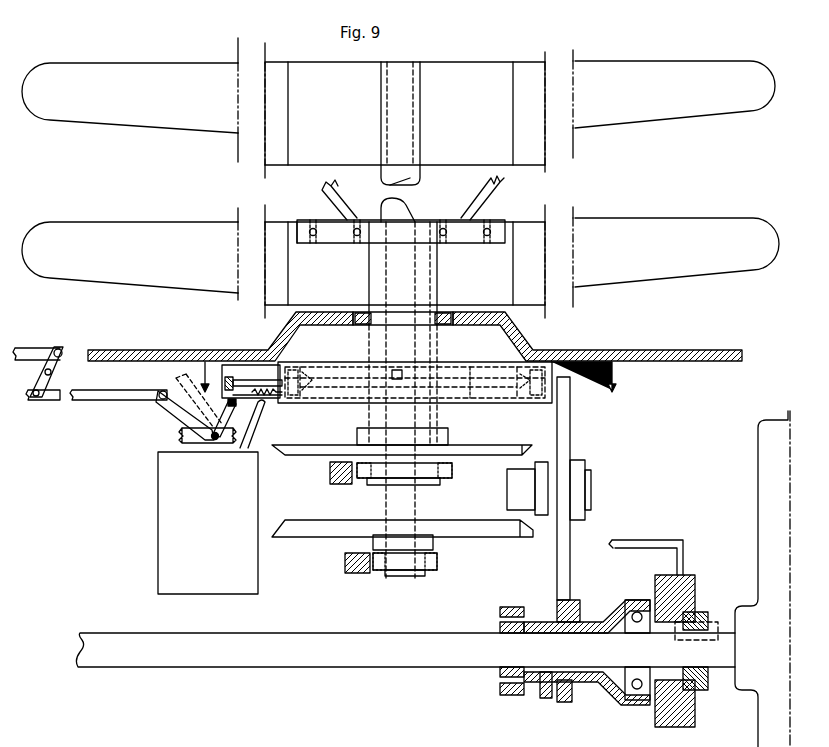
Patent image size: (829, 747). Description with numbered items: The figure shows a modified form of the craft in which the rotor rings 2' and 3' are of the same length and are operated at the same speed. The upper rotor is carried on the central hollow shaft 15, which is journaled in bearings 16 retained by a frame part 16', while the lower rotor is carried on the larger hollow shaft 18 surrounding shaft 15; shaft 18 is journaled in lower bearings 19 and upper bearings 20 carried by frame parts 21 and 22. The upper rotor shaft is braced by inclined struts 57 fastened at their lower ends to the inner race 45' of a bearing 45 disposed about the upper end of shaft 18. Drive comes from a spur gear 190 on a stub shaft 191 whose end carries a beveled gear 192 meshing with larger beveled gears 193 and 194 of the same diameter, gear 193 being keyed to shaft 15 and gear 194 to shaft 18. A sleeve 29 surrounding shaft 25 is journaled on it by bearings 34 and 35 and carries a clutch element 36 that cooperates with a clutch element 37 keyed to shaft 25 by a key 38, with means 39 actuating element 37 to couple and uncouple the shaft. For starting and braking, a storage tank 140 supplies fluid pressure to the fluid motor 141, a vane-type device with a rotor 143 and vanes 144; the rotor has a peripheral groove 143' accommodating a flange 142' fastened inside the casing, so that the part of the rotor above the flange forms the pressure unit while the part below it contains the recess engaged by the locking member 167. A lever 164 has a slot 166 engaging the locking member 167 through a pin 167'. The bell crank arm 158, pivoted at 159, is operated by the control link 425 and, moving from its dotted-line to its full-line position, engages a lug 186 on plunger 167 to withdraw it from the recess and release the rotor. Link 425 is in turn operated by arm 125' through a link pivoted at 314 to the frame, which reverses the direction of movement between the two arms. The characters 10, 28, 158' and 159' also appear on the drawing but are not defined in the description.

The rotor ring 2' is at (398, 108).
The rotor ring 3' is at (400, 258).
The direction arrow 10 is at (406, 388).
The central hollow shaft 15 is at (420, 500).
The bearings 16 is at (398, 569).
The frame part 16' is at (349, 578).
The hollow shaft 18 is at (437, 338).
The lower bearings 19 is at (361, 480).
The upper bearings 20 is at (365, 312).
The aircraft frame part 21 is at (329, 476).
The aircraft frame part 22 is at (530, 341).
The shaft 25 is at (416, 668).
The bearing 28 is at (570, 704).
The sleeve 29 is at (540, 700).
The bearing 34 is at (500, 689).
The bearing 35 is at (615, 700).
The clutch element 36 is at (655, 582).
The clutch element 37 is at (696, 590).
The key 38 is at (702, 626).
The actuating means 39 is at (640, 548).
The bearing 45 is at (401, 251).
The inner race 45' is at (309, 245).
The inclined struts 57 is at (498, 186).
The operating arm 125' is at (37, 345).
The storage tank 140 is at (258, 594).
The fluid motor 141 is at (494, 414).
The flange 142' is at (450, 361).
The rotor disc 143 is at (493, 360).
The groove 143' is at (417, 366).
The vanes 144 is at (402, 370).
The bell crank arm 158 is at (242, 424).
The link 158' is at (261, 422).
The pivot 159 is at (163, 423).
The link alternate position 159' is at (181, 397).
The lever 164 is at (224, 365).
The slot 166 is at (205, 362).
The locking member 167 is at (253, 381).
The pin 167' is at (258, 359).
The lug 186 is at (211, 436).
The spur gear 190 is at (566, 545).
The stub shaft 191 is at (586, 484).
The beveled gear 192 is at (540, 525).
The beveled gear 193 is at (497, 537).
The beveled gear 194 is at (502, 455).
The pivot 314 is at (50, 375).
The control link 425 is at (112, 398).